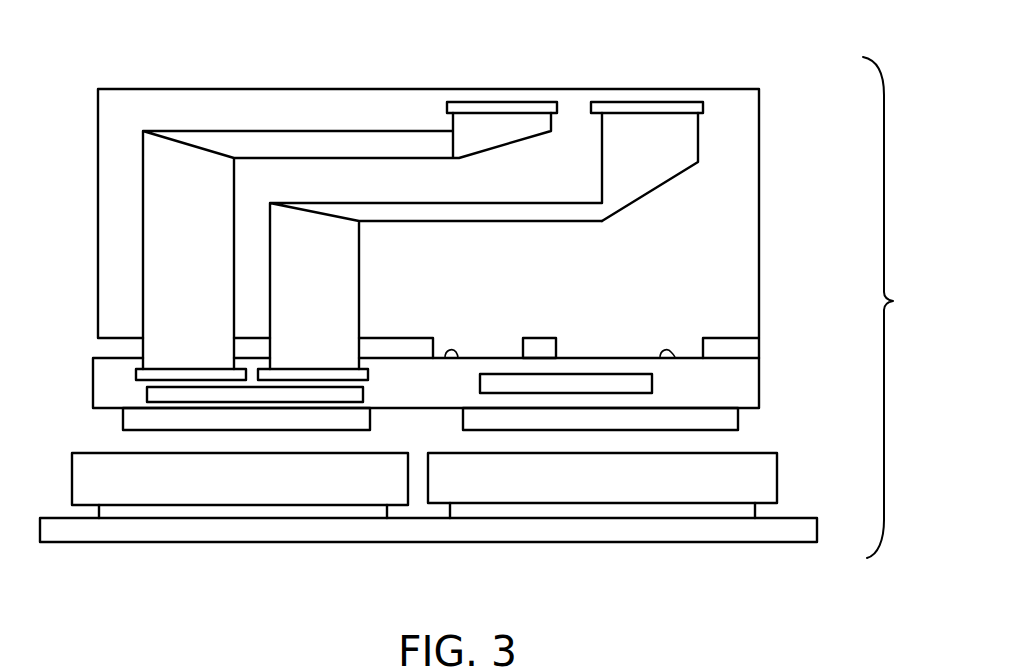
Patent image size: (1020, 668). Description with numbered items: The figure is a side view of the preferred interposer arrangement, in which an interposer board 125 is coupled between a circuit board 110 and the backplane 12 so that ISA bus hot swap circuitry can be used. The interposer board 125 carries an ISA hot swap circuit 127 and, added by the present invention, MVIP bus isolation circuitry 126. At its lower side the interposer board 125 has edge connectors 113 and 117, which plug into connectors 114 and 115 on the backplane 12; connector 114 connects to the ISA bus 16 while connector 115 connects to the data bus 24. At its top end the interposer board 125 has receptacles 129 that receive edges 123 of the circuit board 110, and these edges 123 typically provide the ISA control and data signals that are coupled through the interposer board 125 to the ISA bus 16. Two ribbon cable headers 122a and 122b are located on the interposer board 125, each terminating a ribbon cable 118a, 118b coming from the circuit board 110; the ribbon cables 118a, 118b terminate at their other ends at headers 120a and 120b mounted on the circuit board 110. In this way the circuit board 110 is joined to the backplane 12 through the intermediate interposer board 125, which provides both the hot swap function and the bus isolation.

The circuit board 110 is at (731, 106).
The ribbon cable 118a is at (217, 205).
The ribbon cable 118b is at (670, 158).
The header 120a is at (447, 104).
The header 120b is at (592, 103).
The ribbon cable header 122a is at (136, 377).
The ribbon cable header 122b is at (368, 379).
The MVIP bus isolation circuitry 126 is at (270, 402).
The edge connector 117 is at (123, 419).
The interposer board 125 is at (742, 389).
The edge connector 113 is at (733, 423).
The edges 123 is at (487, 345).
The ISA hot swap circuit 127 is at (577, 393).
The receptacles 129 is at (445, 358).
The connector 115 is at (71, 483).
The connector 114 is at (765, 478).
The data bus 24 is at (147, 512).
The ISA bus 16 is at (475, 513).
The backplane 12 is at (817, 535).